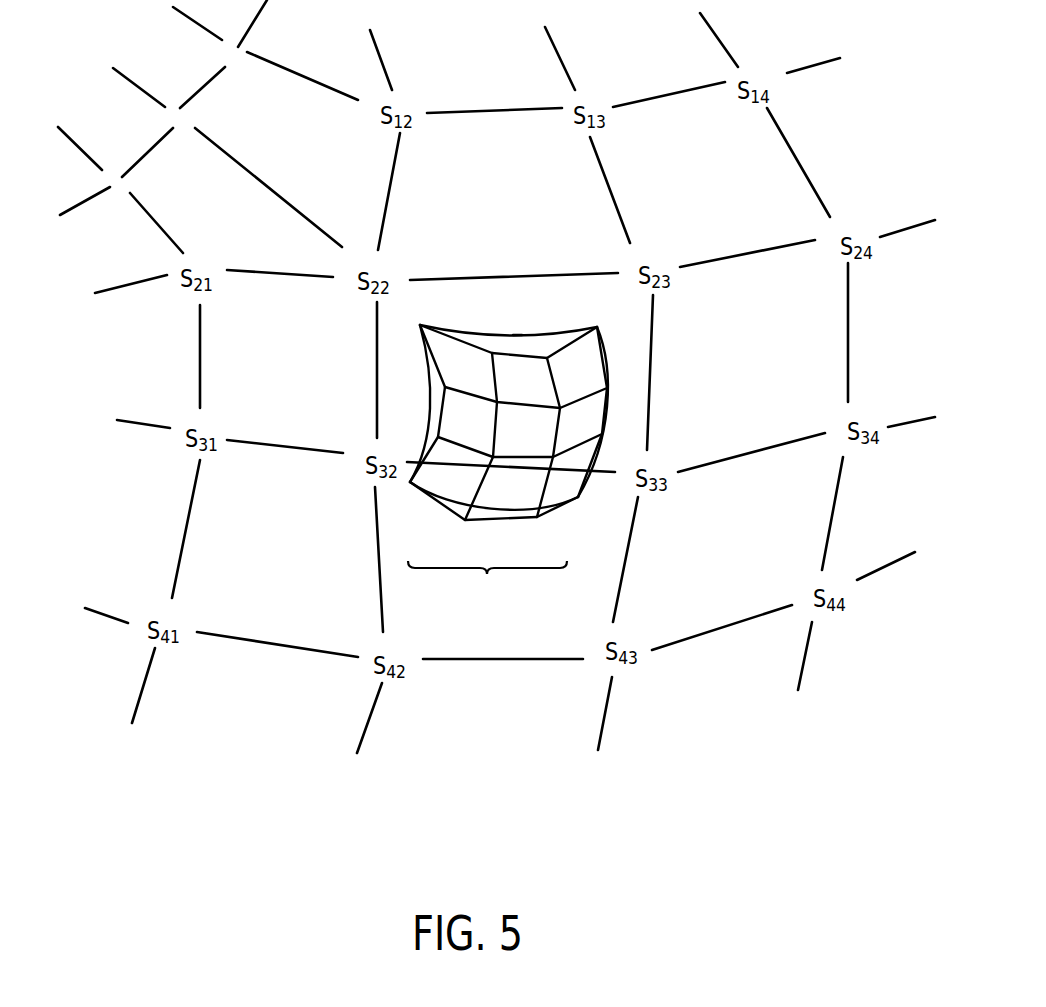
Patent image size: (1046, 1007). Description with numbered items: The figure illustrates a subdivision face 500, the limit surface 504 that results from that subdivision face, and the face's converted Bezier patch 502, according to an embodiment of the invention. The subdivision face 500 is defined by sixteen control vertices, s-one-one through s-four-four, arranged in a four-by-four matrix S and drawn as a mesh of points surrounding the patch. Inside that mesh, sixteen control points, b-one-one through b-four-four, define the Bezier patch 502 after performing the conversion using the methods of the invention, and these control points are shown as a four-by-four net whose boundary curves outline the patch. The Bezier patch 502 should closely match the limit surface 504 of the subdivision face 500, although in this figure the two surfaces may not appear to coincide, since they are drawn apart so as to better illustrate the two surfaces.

The subdivision face 500 is at (506, 300).
The Bezier patch 502 is at (598, 362).
The limit surface 504 is at (487, 587).